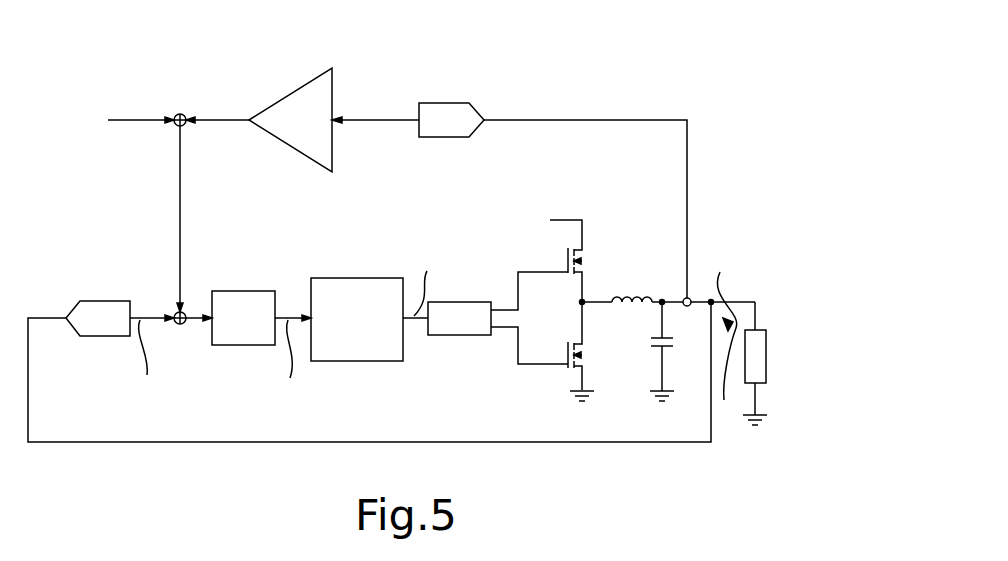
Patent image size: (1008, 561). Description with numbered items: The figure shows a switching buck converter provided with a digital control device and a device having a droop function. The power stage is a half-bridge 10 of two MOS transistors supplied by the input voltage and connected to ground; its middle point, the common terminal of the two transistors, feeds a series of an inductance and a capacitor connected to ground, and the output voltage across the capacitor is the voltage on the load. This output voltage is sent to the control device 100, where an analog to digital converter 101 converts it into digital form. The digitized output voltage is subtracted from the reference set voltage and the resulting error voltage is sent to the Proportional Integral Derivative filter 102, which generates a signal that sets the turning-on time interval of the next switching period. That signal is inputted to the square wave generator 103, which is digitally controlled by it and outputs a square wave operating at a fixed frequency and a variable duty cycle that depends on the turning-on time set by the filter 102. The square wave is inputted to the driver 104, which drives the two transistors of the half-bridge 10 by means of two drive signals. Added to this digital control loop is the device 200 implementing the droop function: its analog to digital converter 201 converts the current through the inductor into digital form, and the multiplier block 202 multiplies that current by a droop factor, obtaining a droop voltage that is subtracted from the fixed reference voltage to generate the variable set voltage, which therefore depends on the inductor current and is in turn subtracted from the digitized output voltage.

The device implementing a droop function 200 is at (282, 55).
The multiplier block 202 is at (320, 80).
The analog to digital converter 201 is at (453, 103).
The control device 100 is at (300, 208).
The analog to digital converter 101 is at (106, 299).
The Proportional Integral Derivative (PID) filter 102 is at (245, 291).
The square wave generator 103 is at (357, 278).
The driver 104 is at (486, 302).
The half-bridge 10 is at (510, 208).